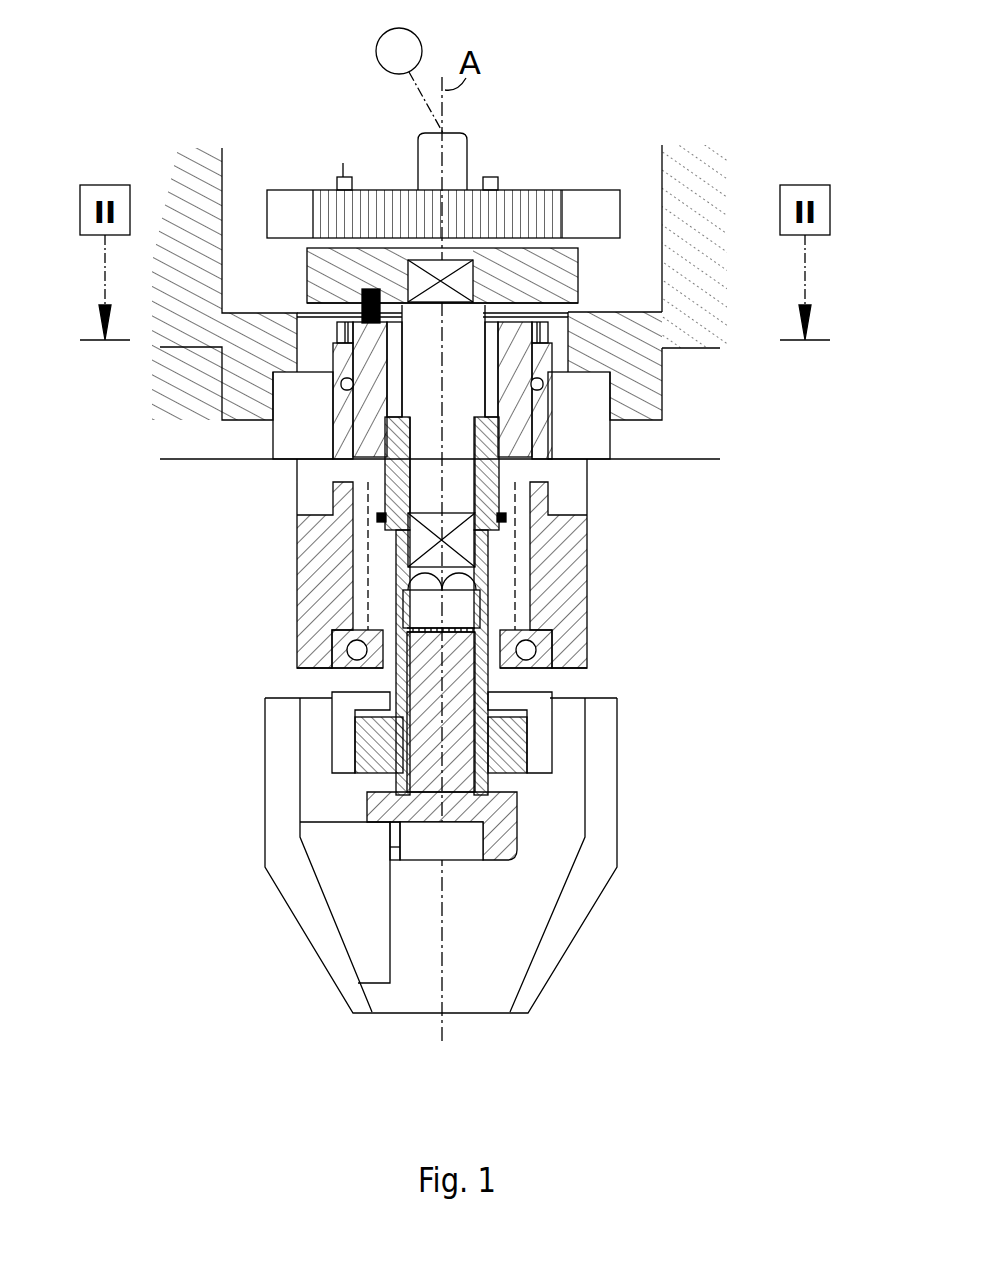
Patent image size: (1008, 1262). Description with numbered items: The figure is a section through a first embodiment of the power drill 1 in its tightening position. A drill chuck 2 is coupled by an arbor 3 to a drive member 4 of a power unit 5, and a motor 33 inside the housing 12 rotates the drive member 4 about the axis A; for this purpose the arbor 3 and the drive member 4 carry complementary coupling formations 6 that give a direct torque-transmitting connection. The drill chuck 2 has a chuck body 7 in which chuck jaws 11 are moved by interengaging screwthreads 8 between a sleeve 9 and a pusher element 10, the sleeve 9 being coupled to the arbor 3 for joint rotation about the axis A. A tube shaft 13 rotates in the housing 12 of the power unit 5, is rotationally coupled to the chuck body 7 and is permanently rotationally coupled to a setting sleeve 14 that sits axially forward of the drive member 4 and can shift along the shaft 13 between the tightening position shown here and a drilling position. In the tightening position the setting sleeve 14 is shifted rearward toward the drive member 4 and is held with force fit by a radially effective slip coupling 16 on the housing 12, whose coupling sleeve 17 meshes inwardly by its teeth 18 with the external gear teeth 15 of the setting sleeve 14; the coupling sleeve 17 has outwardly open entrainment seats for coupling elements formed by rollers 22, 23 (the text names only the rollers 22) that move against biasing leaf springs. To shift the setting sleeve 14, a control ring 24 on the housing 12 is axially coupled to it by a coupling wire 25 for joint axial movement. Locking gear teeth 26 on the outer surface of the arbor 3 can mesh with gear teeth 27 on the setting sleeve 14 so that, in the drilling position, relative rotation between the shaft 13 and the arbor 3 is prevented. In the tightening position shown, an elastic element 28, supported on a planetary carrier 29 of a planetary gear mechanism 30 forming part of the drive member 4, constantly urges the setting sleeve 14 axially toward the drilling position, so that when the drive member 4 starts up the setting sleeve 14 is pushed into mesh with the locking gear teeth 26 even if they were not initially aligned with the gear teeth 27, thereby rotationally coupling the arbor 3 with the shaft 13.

The power drill 1 is at (284, 114).
The drill chuck 2 is at (624, 950).
The arbor 3 is at (528, 277).
The drive member 4 is at (483, 128).
The power unit 5 is at (753, 450).
The coupling formations 6 is at (418, 147).
The chuck body 7 is at (605, 861).
The screwthreads 8 is at (407, 682).
The sleeve 9 is at (388, 744).
The pusher element 10 is at (383, 802).
The chuck jaws 11 is at (370, 905).
The housing 12 is at (707, 250).
The tube shaft 13 is at (547, 732).
The setting sleeve 14 is at (495, 405).
The external gear teeth 15 is at (553, 403).
The slip coupling 16 is at (325, 380).
The coupling sleeve 17 is at (560, 325).
The teeth 18 is at (536, 348).
The rollers 22 is at (231, 256).
The mounting plate 23 is at (310, 340).
The control ring 24 is at (627, 433).
The coupling wire 25 is at (353, 382).
The locking gear teeth 26 is at (506, 418).
The gear teeth 27 is at (492, 343).
The elastic element 28 is at (358, 290).
The planetary carrier 29 is at (467, 320).
The planetary gear mechanism 30 is at (645, 183).
The motor 33 is at (378, 42).